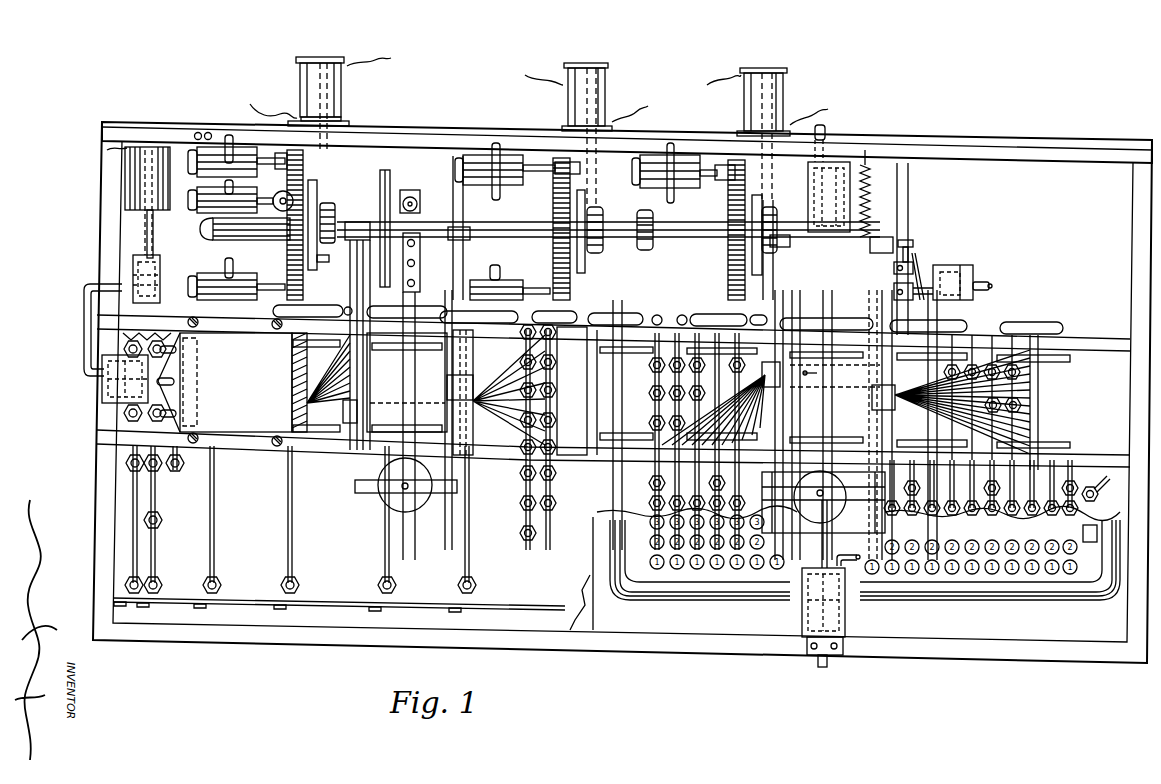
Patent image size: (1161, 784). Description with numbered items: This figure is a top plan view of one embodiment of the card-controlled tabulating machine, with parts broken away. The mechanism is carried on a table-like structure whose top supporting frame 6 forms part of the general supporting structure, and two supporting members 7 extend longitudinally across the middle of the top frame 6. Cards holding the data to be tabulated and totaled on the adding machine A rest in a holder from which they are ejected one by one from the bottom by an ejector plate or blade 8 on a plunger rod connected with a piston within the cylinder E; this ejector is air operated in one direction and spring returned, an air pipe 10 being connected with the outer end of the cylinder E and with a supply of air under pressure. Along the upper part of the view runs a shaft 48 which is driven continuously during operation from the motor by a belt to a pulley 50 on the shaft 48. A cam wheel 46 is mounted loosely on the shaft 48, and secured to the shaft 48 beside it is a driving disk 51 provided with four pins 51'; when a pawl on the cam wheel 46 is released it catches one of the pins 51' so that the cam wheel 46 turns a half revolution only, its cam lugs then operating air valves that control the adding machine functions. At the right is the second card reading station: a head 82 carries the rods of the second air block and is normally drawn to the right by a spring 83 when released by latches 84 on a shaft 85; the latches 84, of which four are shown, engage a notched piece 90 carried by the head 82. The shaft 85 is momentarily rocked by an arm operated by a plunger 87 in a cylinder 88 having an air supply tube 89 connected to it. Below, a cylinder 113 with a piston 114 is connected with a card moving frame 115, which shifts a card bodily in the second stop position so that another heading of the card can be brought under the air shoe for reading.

The top supporting frame 6 is at (413, 138).
The supporting members 7 is at (1108, 346).
The ejector plate or blade 8 is at (175, 379).
The air pipe 10 is at (84, 330).
The cam wheel 46 is at (287, 250).
The shaft 48 is at (517, 226).
The pulley 50 is at (388, 194).
The driving disk 51 is at (319, 236).
The pins 51' is at (335, 270).
The head 82 is at (896, 240).
The spring 83 is at (866, 190).
The latches 84 is at (909, 262).
The shaft 85 is at (905, 179).
The plunger 87 is at (921, 292).
The cylinder 88 is at (955, 271).
The air supply tube 89 is at (986, 283).
The notched piece 90 is at (905, 241).
The cylinder 113 is at (838, 616).
The piston 114 is at (822, 564).
The card moving frame 115 is at (822, 533).
The cylinder E is at (104, 386).
The adding machine A is at (1072, 610).